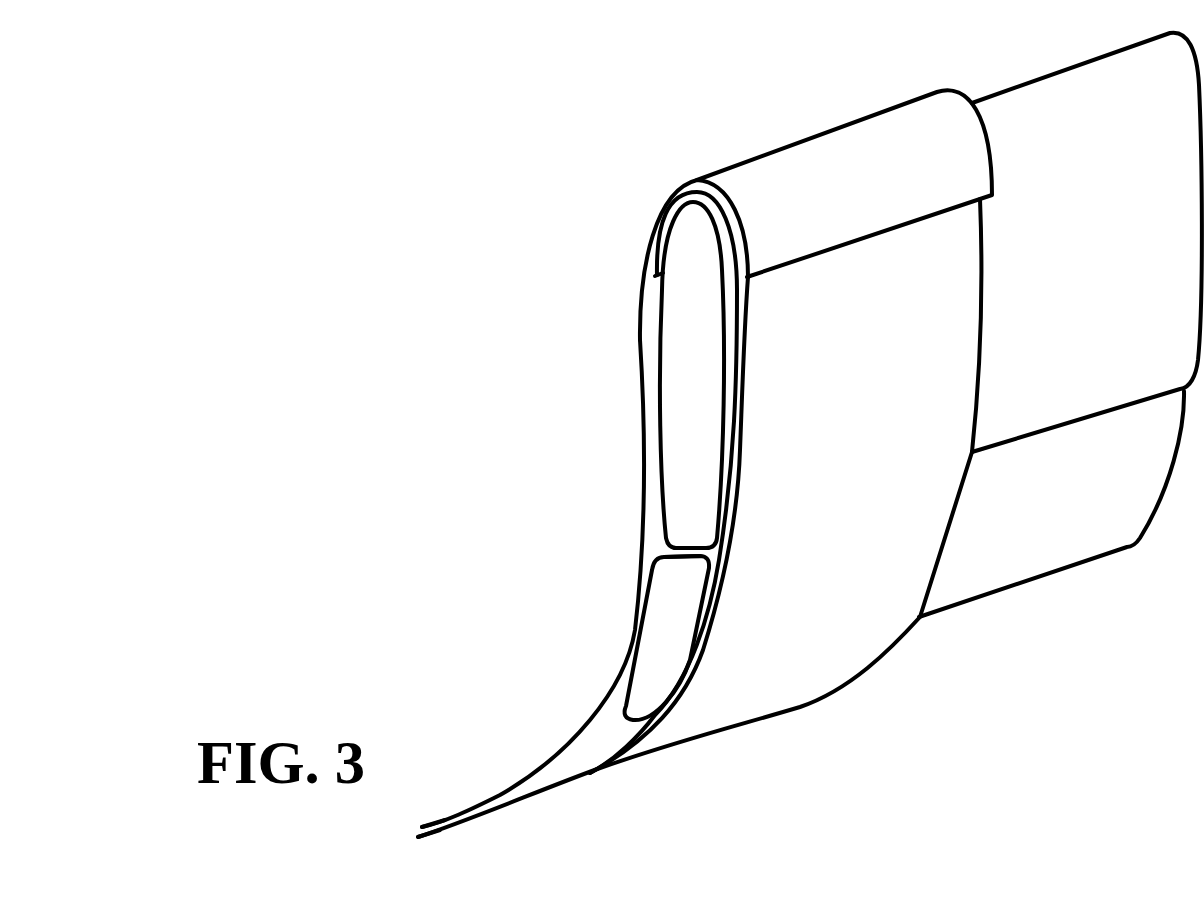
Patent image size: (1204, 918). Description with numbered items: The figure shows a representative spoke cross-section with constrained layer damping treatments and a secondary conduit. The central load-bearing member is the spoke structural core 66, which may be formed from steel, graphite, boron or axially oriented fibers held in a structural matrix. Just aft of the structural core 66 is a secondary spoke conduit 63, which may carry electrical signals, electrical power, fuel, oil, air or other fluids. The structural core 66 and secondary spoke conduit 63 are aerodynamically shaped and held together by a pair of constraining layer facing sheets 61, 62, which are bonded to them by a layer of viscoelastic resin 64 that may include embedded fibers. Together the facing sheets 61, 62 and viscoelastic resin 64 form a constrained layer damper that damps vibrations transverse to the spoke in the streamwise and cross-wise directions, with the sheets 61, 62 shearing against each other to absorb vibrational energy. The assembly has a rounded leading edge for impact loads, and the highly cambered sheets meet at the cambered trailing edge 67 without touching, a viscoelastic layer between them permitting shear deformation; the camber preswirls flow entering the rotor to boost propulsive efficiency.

The constraining layer facing sheet 61 is at (643, 333).
The constraining layer facing sheet 62 is at (840, 643).
The secondary spoke conduit 63 is at (667, 642).
The viscoelastic resin layer 64 is at (657, 553).
The spoke structural core 66 is at (893, 375).
The cambered trailing edge 67 is at (448, 817).